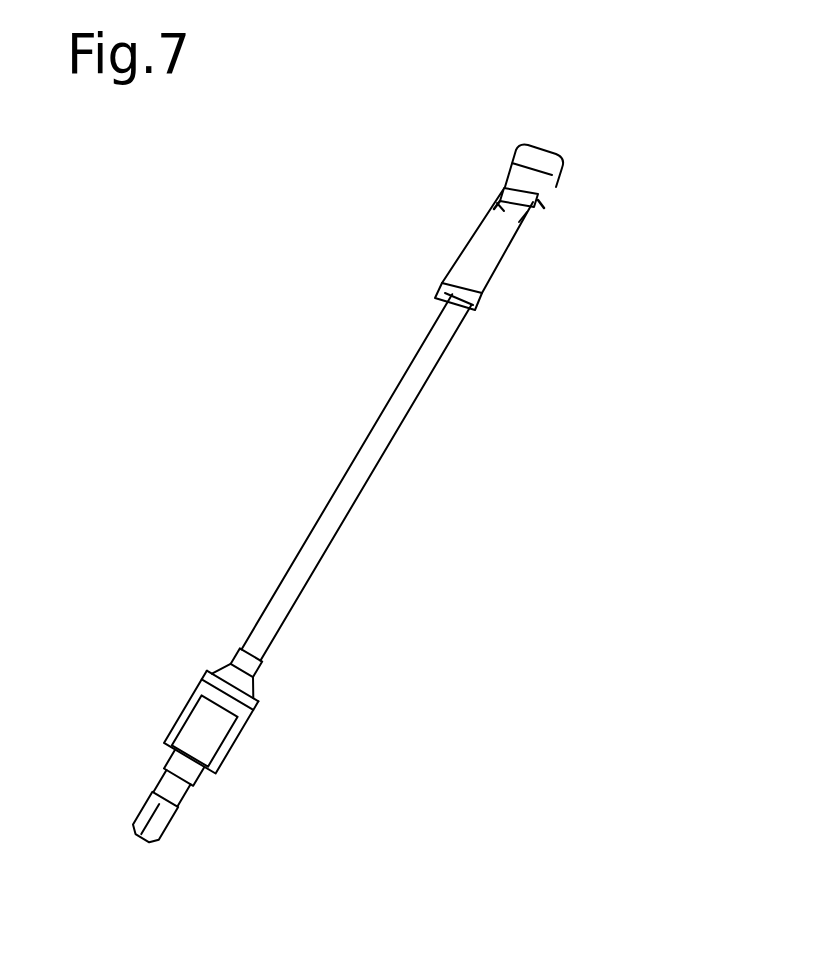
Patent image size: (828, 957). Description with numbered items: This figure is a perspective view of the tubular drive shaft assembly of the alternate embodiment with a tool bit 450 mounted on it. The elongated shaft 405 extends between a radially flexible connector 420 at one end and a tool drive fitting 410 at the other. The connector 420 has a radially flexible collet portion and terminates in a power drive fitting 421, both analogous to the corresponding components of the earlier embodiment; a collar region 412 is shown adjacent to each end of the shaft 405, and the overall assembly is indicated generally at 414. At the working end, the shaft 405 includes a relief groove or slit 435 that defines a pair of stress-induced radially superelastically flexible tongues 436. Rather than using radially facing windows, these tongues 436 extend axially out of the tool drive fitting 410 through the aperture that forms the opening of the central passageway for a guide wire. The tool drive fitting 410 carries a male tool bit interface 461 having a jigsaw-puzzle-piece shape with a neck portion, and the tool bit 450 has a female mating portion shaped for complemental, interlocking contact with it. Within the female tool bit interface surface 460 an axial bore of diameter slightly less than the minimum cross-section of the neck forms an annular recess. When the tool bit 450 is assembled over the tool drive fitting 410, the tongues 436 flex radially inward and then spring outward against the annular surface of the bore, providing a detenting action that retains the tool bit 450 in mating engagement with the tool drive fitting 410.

The shaft 405 is at (315, 566).
The tool drive fitting 410 is at (488, 265).
The collar 412 is at (440, 293).
The probe assembly 414 is at (230, 354).
The radially flexible connector 420 is at (236, 660).
The power drive fitting 421 is at (240, 718).
The relief groove or slit 435 is at (535, 190).
The radially superelastically reactively flexing tongues 436 is at (503, 186).
The tool bit 450 is at (545, 168).
The female tool bit interface surface 460 is at (528, 214).
The male tool bit interface 461 is at (500, 202).